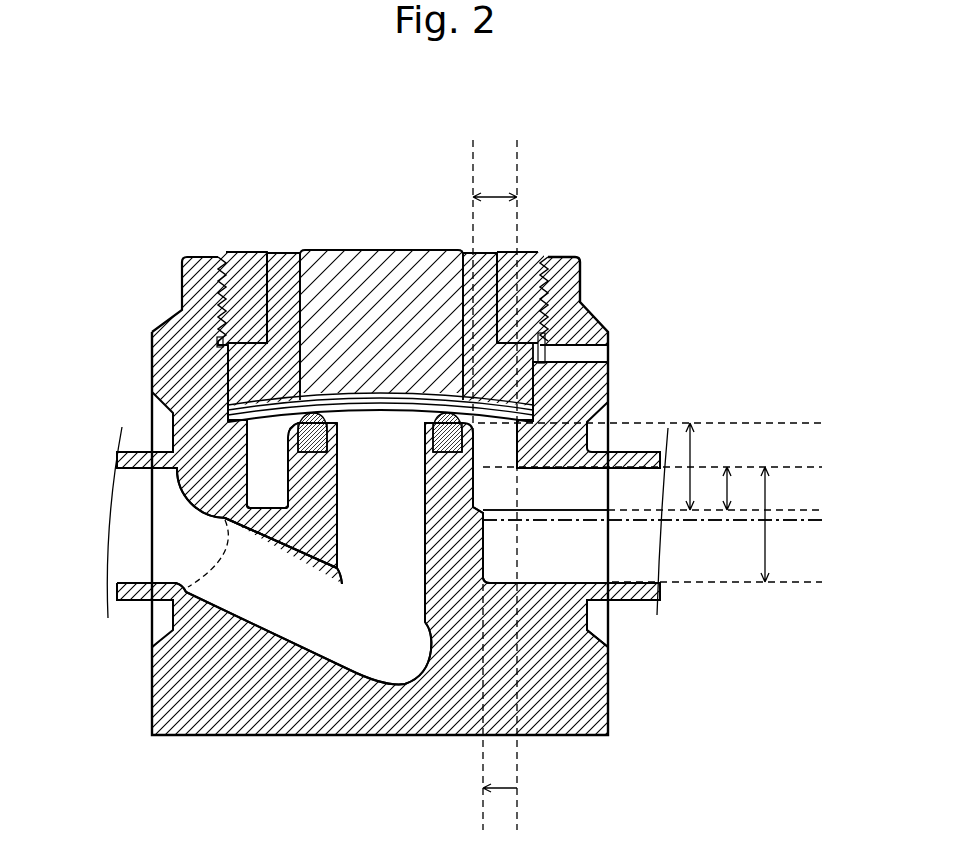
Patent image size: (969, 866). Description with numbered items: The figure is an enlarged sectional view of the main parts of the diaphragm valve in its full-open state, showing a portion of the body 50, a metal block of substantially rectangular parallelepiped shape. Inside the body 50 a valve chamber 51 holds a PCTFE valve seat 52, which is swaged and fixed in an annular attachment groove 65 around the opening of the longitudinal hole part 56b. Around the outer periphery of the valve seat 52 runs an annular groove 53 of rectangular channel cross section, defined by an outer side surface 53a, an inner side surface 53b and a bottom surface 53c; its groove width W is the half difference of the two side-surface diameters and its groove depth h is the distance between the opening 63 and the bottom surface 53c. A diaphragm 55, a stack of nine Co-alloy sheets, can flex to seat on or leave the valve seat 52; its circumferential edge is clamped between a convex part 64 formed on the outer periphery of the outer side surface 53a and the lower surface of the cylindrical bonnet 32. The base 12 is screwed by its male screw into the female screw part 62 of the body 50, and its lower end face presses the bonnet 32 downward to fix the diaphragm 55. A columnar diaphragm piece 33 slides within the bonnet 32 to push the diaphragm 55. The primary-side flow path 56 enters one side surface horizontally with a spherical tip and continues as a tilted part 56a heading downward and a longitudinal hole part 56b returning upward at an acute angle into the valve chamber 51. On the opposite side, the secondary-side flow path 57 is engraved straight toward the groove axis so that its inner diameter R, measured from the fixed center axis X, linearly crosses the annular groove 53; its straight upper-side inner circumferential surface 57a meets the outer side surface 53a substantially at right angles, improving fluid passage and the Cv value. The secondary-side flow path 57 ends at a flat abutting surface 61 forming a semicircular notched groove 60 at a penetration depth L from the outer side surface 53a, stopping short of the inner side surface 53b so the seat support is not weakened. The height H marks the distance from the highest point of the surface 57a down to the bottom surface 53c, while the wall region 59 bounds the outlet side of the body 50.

The base 12 is at (247, 272).
The bonnet 32 is at (286, 265).
The diaphragm piece 33 is at (403, 283).
The body 50 is at (178, 708).
The valve chamber 51 is at (265, 458).
The valve seat 52 is at (443, 455).
The annular groove 53 is at (283, 445).
The outer side surface 53a is at (255, 472).
The inner side surface 53b is at (272, 493).
The bottom surface 53c is at (282, 520).
The diaphragm 55 is at (290, 412).
The primary-side flow path 56 is at (197, 536).
The tilted part 56a is at (297, 607).
The longitudinal hole part 56b is at (385, 520).
The secondary-side flow path 57 is at (577, 535).
The upper-side inner circumferential surface 57a is at (620, 482).
The outlet side wall 59 is at (508, 478).
The semicircular notched groove 60 is at (612, 640).
The abutting surface 61 is at (622, 490).
The female screw part 62 is at (553, 280).
The opening 63 is at (403, 540).
The convex part 64 is at (272, 437).
The annular attachment groove 65 is at (347, 490).
The groove width W is at (492, 195).
The penetration depth L is at (515, 788).
The groove depth h is at (690, 452).
The height H is at (727, 483).
The inner diameter R is at (768, 492).
The center axis X is at (777, 522).